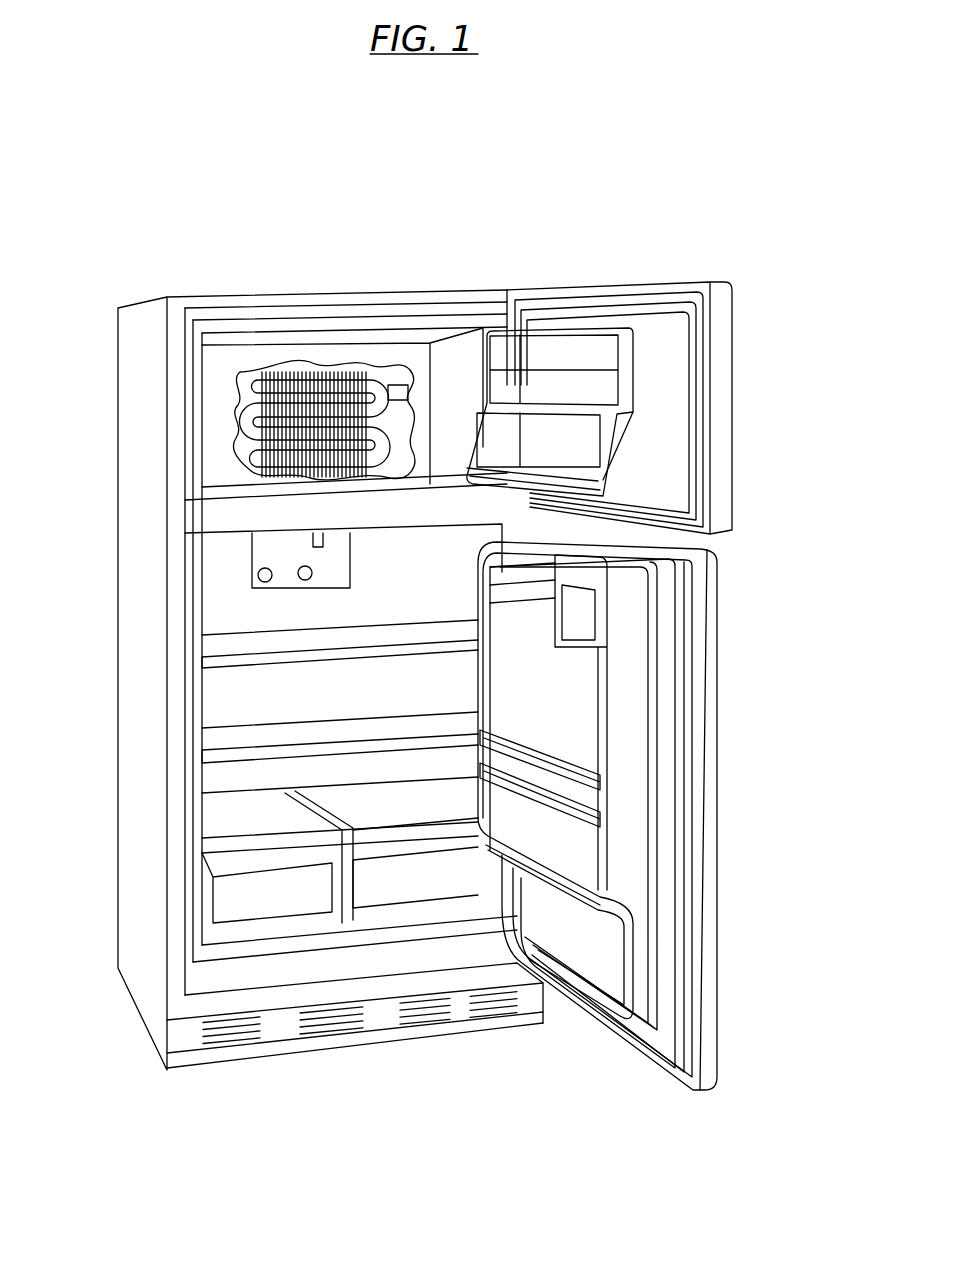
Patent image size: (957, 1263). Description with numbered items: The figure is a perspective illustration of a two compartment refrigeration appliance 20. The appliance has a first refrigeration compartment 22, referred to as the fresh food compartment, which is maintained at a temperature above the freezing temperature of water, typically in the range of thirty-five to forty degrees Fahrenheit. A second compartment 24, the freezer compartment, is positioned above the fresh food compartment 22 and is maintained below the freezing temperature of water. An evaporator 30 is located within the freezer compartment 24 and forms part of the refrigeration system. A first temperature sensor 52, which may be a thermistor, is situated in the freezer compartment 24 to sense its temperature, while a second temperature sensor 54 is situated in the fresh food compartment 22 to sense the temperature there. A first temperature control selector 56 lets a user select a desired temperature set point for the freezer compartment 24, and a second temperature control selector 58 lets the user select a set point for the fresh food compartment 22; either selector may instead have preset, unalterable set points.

The two compartment refrigeration appliance 20 is at (753, 378).
The first refrigeration compartment 22 is at (262, 800).
The second compartment 24 is at (303, 353).
The evaporator 30 is at (283, 378).
The first temperature sensor 52 is at (397, 377).
The second temperature sensor 54 is at (340, 540).
The first temperature control selector 56 is at (258, 575).
The second temperature control selector 58 is at (307, 582).